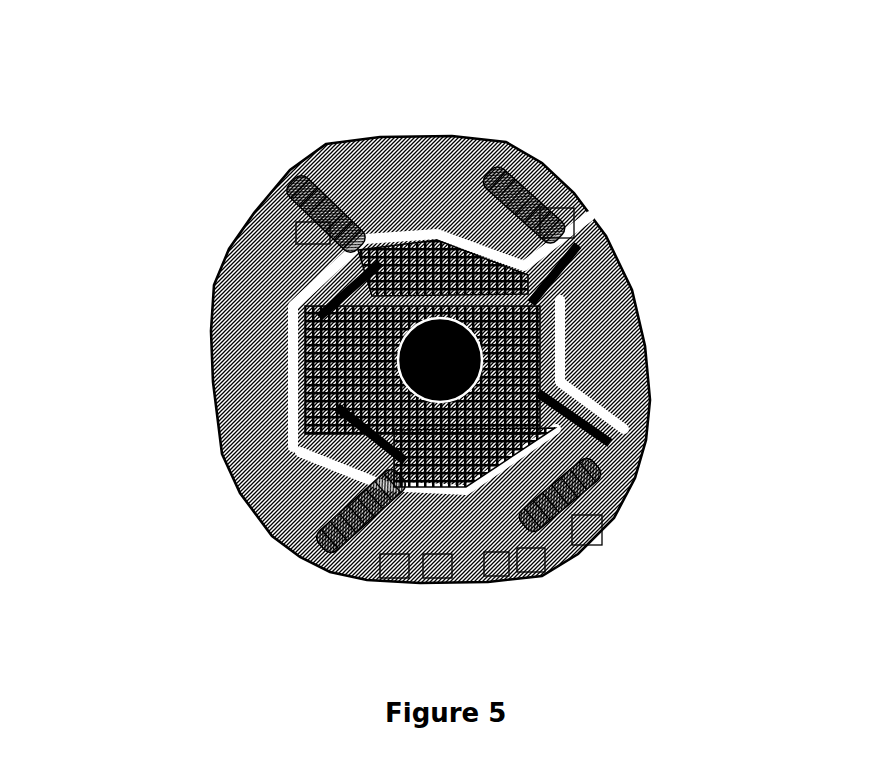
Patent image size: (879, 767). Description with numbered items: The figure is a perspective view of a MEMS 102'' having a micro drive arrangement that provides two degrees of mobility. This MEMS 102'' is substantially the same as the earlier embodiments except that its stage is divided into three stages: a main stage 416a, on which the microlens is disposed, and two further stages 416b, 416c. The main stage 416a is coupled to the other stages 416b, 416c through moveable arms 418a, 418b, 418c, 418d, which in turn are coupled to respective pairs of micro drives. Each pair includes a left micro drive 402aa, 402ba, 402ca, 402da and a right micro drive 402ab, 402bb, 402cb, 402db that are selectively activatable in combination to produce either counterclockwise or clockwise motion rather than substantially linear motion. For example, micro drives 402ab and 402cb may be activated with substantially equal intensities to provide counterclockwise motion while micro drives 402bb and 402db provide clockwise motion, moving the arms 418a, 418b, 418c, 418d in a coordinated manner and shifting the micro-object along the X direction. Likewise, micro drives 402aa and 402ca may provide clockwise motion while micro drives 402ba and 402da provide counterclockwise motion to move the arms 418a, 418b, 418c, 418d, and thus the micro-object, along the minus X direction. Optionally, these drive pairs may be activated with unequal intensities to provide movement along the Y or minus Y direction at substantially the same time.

The MEMS 102'' is at (437, 298).
The main stage 416a is at (308, 382).
The stage 416b is at (430, 240).
The stage 416c is at (455, 450).
The moveable arm 418a is at (545, 298).
The moveable arm 418b is at (580, 417).
The moveable arm 418c is at (344, 303).
The moveable arm 418d is at (358, 428).
The left micro drive 402aa is at (510, 190).
The right micro drive 402ab is at (557, 198).
The left micro drive 402ba is at (587, 533).
The right micro drive 402bb is at (584, 546).
The left micro drive 402ca is at (335, 225).
The right micro drive 402cb is at (323, 190).
The left micro drive 402da is at (380, 475).
The right micro drive 402db is at (372, 556).